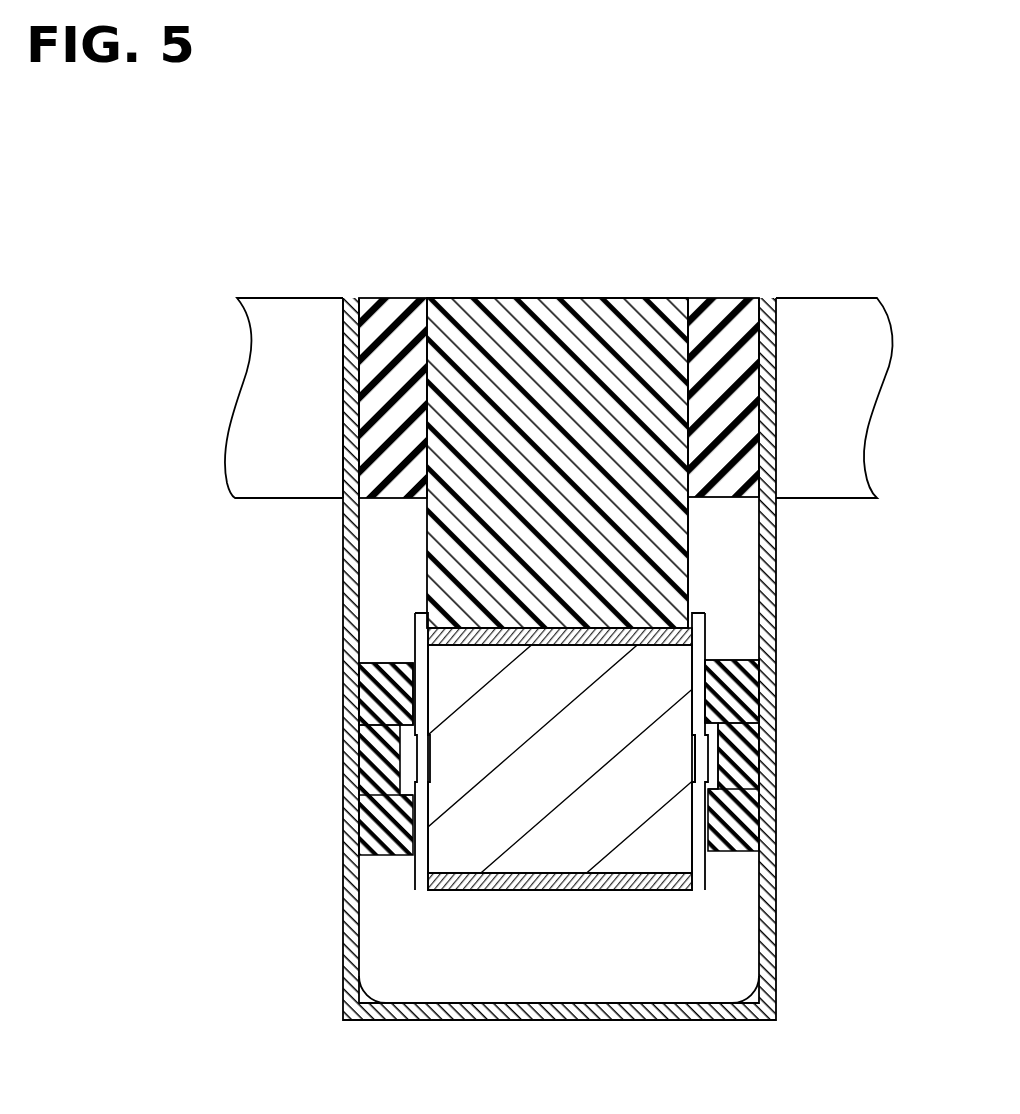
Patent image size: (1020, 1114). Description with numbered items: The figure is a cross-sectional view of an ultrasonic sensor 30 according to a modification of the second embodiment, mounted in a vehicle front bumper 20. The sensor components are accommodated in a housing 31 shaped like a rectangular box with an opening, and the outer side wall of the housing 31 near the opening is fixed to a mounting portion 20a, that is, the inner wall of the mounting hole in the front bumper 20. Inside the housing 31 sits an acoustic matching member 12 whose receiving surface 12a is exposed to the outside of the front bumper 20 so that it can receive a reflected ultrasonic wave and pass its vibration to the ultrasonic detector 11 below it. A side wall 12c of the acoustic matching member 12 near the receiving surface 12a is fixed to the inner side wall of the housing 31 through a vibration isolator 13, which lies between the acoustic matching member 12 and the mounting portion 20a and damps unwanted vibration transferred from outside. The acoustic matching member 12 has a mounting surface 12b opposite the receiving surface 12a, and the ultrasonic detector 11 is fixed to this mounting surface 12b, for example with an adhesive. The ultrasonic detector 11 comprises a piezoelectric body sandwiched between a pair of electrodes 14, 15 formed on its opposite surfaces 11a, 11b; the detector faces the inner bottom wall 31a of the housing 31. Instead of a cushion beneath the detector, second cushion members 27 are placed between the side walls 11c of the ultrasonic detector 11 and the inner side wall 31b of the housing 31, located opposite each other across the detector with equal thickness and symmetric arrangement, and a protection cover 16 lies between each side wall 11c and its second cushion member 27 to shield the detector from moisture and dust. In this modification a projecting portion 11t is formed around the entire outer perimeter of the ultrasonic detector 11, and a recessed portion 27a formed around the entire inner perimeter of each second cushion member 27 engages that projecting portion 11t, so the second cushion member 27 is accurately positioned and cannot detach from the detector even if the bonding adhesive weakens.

The ultrasonic detector 11 is at (680, 855).
The surface of the piezoelectric body 11a is at (707, 662).
The surface of the piezoelectric body 11b is at (525, 880).
The side wall of the ultrasonic detector 11c is at (410, 708).
The projecting portion 11t is at (708, 750).
The acoustic matching member 12 is at (660, 562).
The receiving surface 12a is at (580, 298).
The mounting surface 12b is at (427, 638).
The side wall of the acoustic matching member 12c is at (707, 353).
The vibration isolator 13 is at (398, 307).
The electrode 14 is at (627, 638).
The second electrode 15 is at (615, 880).
The protection cover 16 is at (422, 862).
The front bumper 20 is at (310, 298).
The mounting portion 20a is at (352, 497).
The second cushion member 27 is at (370, 797).
The recessed portion 27a is at (713, 787).
The ultrasonic sensor 30 is at (838, 250).
The housing 31 is at (778, 946).
The inner bottom wall of the housing 31a is at (360, 978).
The inner side wall of the housing 31b is at (748, 1012).